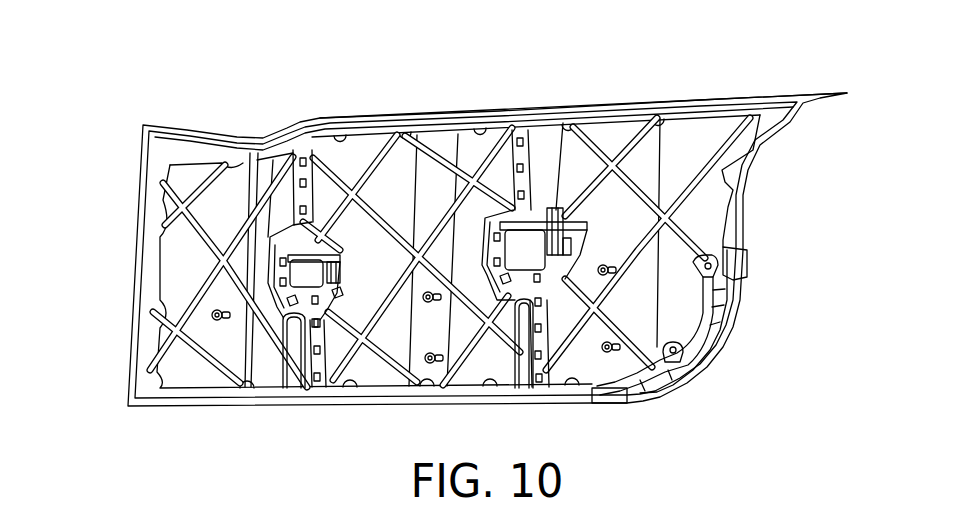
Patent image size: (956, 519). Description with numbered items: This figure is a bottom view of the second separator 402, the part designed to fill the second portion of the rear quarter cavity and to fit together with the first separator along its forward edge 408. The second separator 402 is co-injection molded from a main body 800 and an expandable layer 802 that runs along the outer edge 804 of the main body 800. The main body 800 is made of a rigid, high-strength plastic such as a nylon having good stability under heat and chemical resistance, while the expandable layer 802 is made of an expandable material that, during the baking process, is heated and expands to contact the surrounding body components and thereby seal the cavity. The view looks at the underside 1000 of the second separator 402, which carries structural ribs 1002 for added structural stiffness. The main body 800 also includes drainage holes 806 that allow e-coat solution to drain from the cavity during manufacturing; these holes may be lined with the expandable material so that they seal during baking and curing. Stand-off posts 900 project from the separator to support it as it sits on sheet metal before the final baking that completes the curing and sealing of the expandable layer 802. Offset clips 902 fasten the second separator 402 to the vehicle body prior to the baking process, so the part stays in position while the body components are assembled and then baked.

The second separator 402 is at (113, 166).
The forward edge 408 is at (122, 270).
The main body 800 is at (623, 210).
The expandable layer 802 is at (743, 98).
The outer edge 804 is at (750, 208).
The drainage holes 806 is at (305, 268).
The stand-off posts 900 is at (217, 321).
The offset clips 902 is at (560, 210).
The underside 1000 is at (367, 156).
The structural ribs 1002 is at (717, 330).